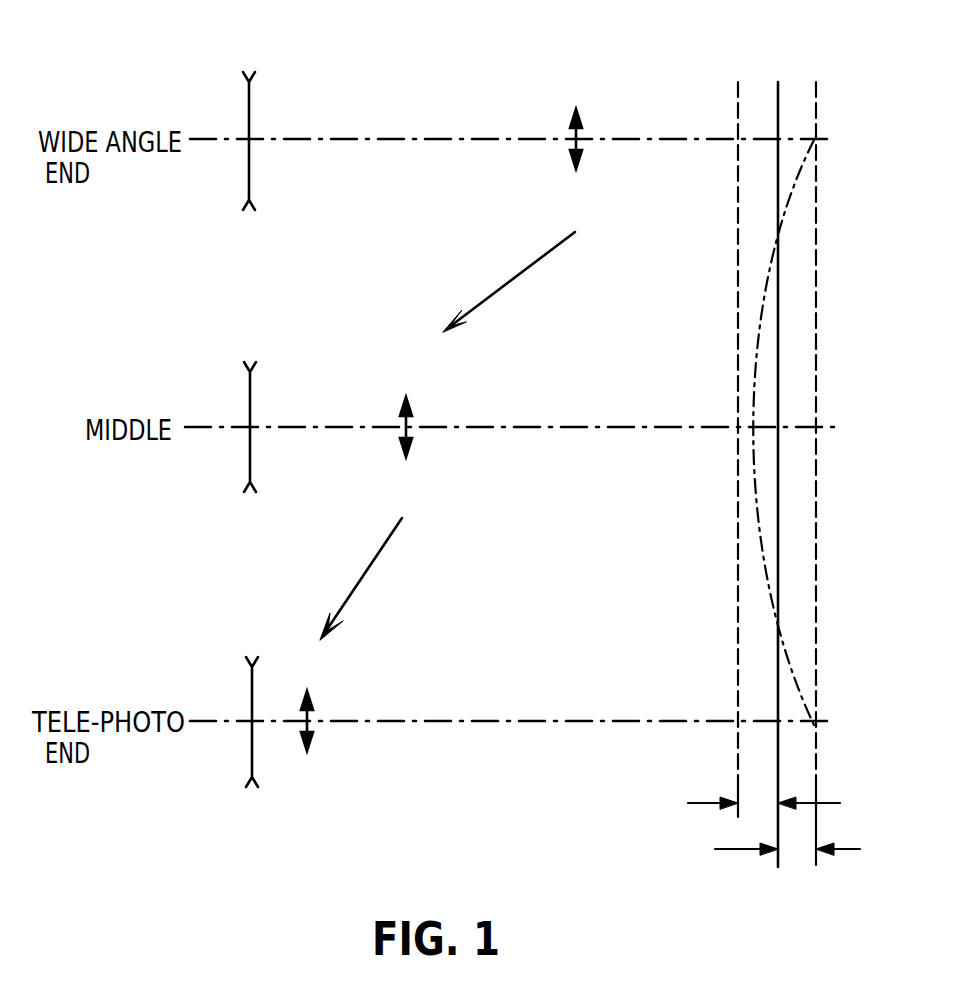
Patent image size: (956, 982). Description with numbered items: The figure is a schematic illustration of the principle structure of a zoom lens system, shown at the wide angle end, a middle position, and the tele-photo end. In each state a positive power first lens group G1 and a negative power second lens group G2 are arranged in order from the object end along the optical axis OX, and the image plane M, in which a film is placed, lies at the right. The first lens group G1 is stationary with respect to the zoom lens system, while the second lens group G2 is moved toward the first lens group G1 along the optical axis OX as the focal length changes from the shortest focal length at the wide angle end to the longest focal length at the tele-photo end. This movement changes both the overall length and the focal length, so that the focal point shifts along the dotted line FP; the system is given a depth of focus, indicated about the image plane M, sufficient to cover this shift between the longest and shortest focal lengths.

The first lens group G1 is at (249, 112).
The second lens group G2 is at (570, 125).
The optical axis OX is at (632, 138).
The image plane M is at (778, 92).
The dotted line of focal point shift FP is at (808, 268).